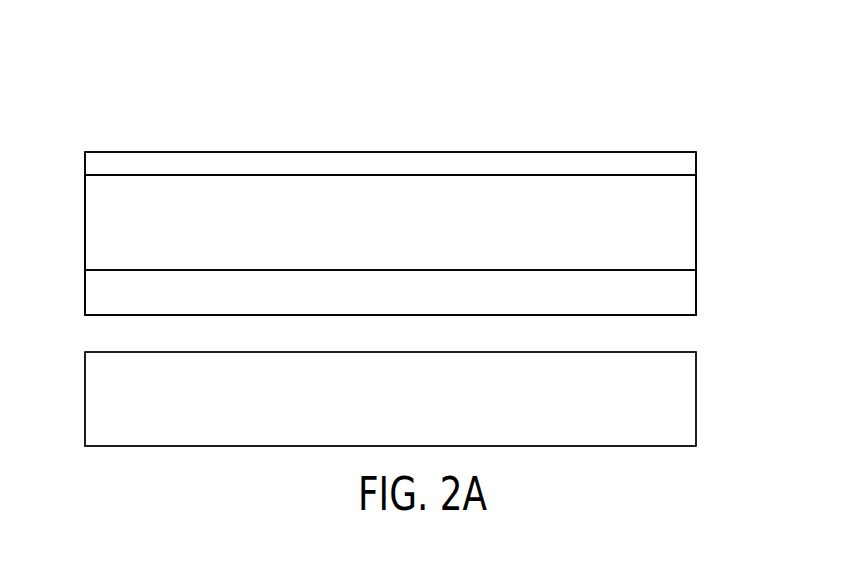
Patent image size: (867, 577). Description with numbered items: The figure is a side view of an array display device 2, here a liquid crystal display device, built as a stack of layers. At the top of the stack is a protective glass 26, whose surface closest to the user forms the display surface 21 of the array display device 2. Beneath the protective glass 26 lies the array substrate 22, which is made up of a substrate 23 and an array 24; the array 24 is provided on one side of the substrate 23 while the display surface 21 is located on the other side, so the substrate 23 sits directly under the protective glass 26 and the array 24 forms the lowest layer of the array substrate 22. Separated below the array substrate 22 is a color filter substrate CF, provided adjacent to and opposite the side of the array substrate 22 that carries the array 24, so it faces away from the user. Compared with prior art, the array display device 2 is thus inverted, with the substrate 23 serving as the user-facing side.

The array display device 2 is at (165, 57).
The display surface 21 is at (480, 152).
The array substrate 22 is at (767, 205).
The substrate 23 is at (697, 222).
The array 24 is at (697, 290).
The protective glass 26 is at (697, 158).
The color filter substrate CF is at (697, 372).